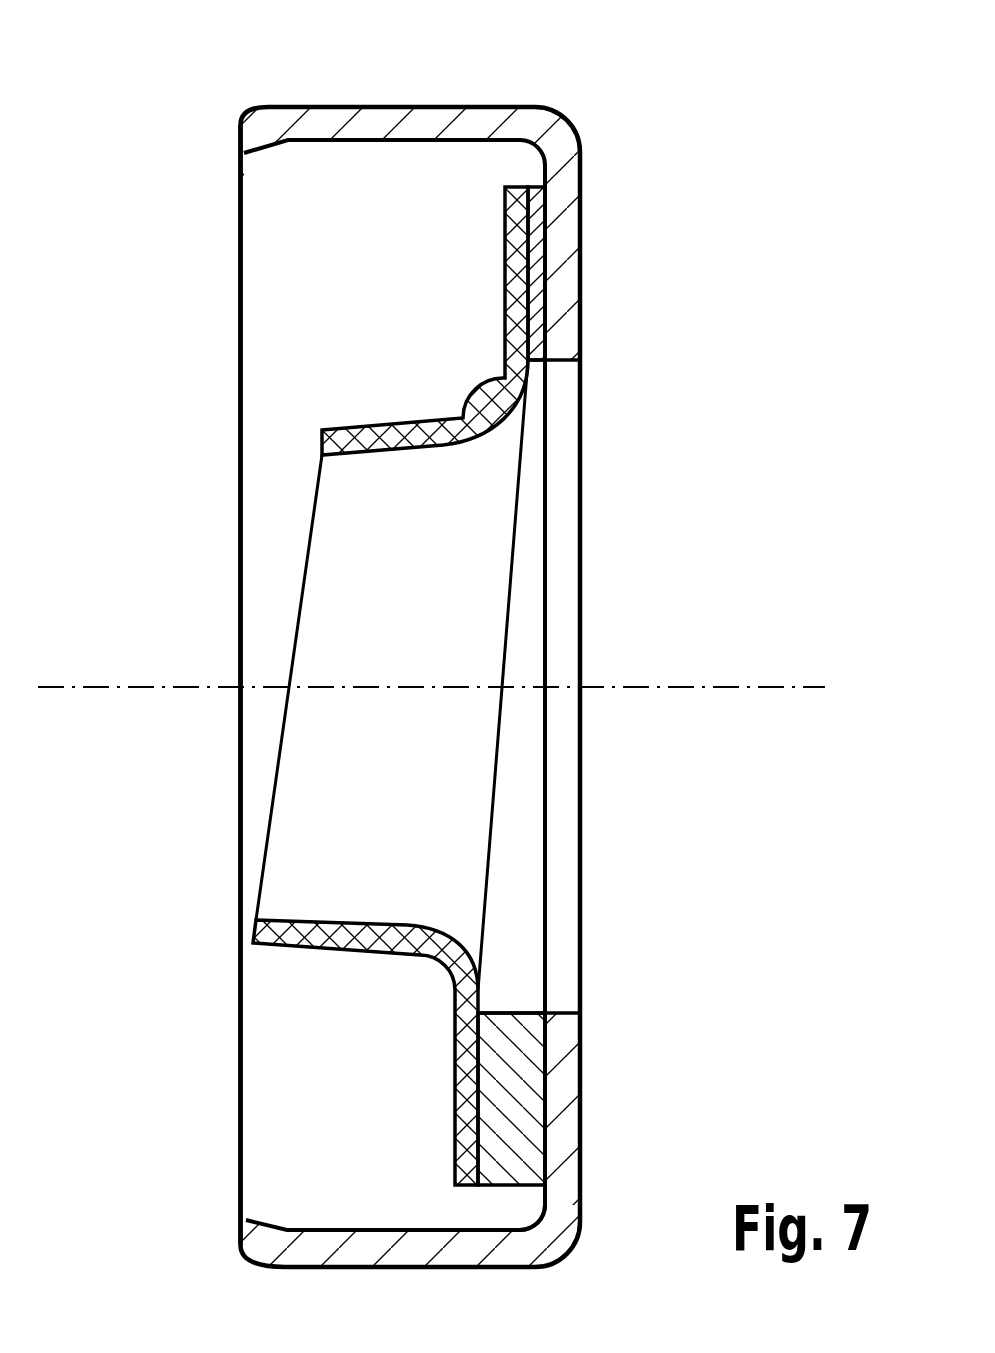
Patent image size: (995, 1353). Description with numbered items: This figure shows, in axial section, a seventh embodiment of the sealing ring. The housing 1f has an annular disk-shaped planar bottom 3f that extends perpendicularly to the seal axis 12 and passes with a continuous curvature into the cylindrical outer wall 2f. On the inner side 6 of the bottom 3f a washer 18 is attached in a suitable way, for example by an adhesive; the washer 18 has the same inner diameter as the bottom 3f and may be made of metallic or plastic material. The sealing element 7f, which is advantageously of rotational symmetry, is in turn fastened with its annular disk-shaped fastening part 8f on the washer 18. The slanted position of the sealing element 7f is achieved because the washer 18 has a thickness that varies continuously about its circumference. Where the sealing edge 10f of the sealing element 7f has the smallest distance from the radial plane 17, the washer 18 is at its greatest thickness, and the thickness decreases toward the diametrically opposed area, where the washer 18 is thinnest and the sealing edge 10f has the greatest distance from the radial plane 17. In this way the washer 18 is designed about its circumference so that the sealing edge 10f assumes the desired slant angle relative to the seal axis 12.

The housing 1f is at (403, 652).
The cylindrical outer wall 2f is at (362, 125).
The planar bottom 3f is at (565, 296).
The sealing element 7f is at (397, 393).
The annular disk-shaped fastening part 8f is at (465, 1092).
The sealing edge 10f is at (275, 763).
The seal axis 12 is at (645, 688).
The radial plane 17 is at (237, 988).
The washer 18 is at (512, 1148).
The inner side 6 is at (528, 1200).